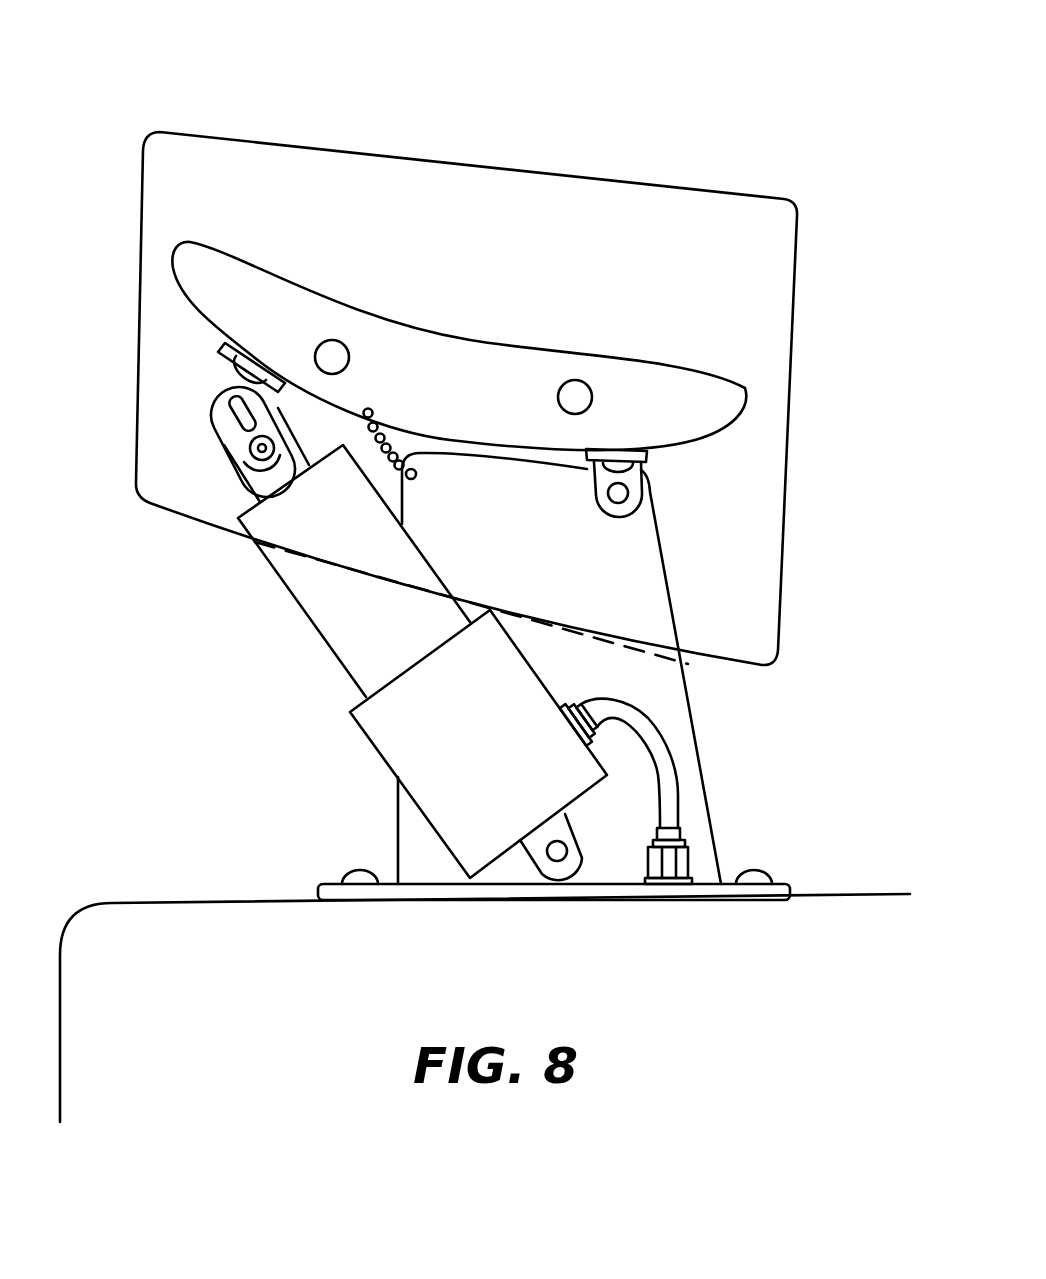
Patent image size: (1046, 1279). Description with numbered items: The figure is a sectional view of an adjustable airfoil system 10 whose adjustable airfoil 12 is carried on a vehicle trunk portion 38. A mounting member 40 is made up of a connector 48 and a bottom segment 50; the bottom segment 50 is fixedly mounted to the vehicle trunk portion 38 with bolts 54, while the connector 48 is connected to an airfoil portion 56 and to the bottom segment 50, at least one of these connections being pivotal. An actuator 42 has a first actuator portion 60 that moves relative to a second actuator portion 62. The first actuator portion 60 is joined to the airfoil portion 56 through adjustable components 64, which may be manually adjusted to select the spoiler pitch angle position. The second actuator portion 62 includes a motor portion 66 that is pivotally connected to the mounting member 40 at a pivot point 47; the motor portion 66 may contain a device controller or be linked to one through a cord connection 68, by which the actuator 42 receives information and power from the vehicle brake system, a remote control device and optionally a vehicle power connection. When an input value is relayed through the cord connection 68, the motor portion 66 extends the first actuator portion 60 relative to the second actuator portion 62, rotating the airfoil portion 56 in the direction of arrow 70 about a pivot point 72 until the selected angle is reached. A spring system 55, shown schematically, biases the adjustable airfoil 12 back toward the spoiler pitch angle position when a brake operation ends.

The adjustable airfoil system 10 is at (840, 458).
The adjustable airfoil 12 is at (348, 320).
The vehicle trunk portion 38 is at (122, 1025).
The mounting member 40 is at (683, 730).
The actuator 42 is at (352, 636).
The pivot point 47 is at (554, 862).
The connector 48 is at (640, 505).
The bottom segment 50 is at (673, 597).
The bolts 54 is at (367, 873).
The spring system 55 is at (395, 428).
The airfoil portion 56 is at (525, 342).
The first actuator portion 60 is at (220, 467).
The second actuator portion 62 is at (292, 598).
The adjustable components 64 is at (245, 422).
The motor portion 66 is at (355, 727).
The cord connection 68 is at (665, 772).
The arrow 70 is at (185, 115).
The pivot point 72 is at (610, 496).